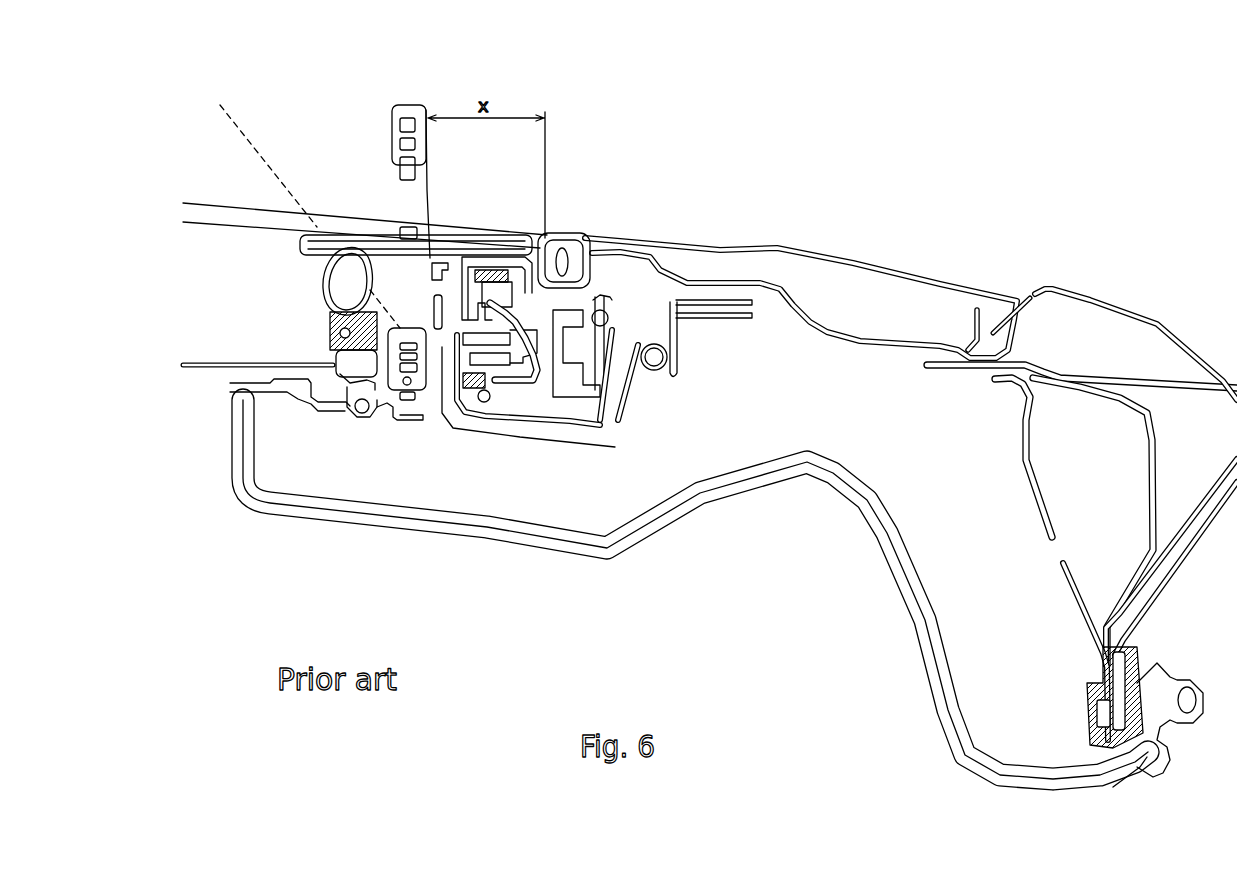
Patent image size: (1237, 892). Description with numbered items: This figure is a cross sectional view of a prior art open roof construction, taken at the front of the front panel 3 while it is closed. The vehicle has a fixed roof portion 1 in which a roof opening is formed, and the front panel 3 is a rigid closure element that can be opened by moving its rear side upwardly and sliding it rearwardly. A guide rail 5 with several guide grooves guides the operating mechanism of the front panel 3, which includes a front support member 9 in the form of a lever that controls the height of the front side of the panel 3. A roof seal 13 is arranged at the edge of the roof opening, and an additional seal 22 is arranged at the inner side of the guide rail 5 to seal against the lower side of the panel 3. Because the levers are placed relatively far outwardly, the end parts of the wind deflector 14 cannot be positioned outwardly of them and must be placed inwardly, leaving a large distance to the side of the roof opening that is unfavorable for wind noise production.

The fixed roof portion 1 is at (860, 257).
The front closure element 3 is at (495, 228).
The guide rail 5 is at (620, 347).
The front support member 9 is at (520, 318).
The roof seal 13 is at (563, 235).
The wind deflector 14 is at (400, 130).
The additional seal 22 is at (327, 273).